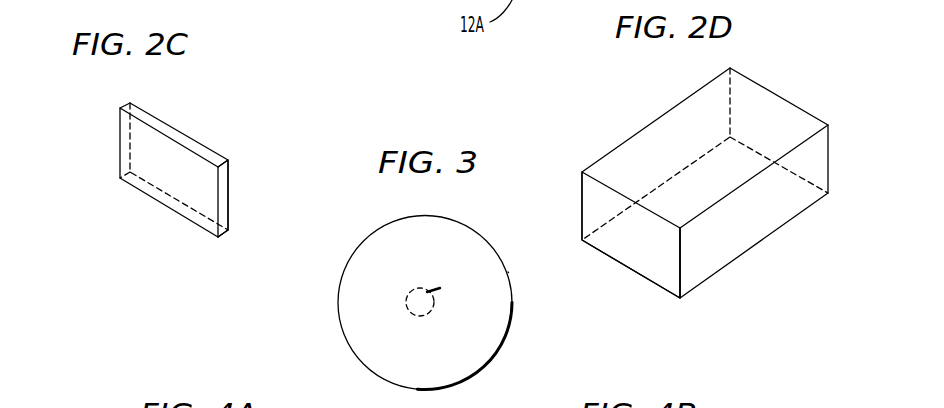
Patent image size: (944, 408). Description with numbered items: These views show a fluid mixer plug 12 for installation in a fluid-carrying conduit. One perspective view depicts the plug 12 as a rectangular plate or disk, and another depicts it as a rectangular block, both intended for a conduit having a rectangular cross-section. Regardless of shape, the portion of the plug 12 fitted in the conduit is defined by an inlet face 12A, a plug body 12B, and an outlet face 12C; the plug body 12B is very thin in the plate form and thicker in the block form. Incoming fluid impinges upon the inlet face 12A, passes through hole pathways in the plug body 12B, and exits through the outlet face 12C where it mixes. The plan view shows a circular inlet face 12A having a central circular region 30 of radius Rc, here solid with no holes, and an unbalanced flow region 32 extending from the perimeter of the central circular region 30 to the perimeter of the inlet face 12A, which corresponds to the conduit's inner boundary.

In FIG. 2C, the fluid mixer plug 12 is at (108, 126).
In FIG. 2D, the fluid mixer plug 12 is at (628, 110).
In FIG. 2C, the inlet face 12A is at (177, 187).
In FIG. 3, the inlet face 12A is at (467, 215).
In FIG. 2D, the inlet face 12A is at (663, 260).
In FIG. 2C, the plug body 12B is at (225, 213).
In FIG. 2D, the plug body 12B is at (772, 207).
In FIG. 2C, the outlet face 12C is at (172, 168).
In FIG. 2D, the outlet face 12C is at (772, 132).
In FIG. 3, the central circular region 30 is at (415, 295).
In FIG. 3, the unbalanced flow region 32 is at (477, 285).
In FIG. 3, the radius of central circular region Rc is at (440, 302).